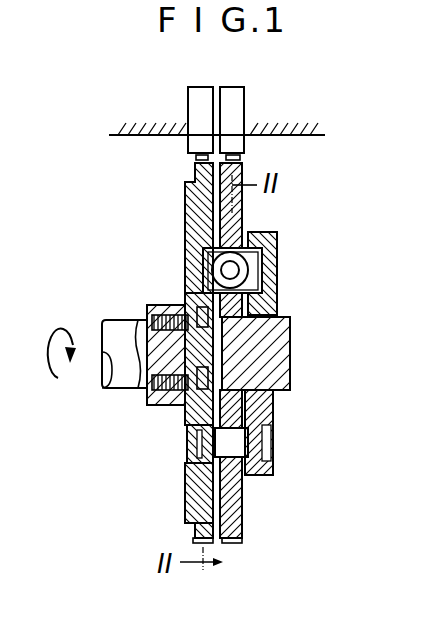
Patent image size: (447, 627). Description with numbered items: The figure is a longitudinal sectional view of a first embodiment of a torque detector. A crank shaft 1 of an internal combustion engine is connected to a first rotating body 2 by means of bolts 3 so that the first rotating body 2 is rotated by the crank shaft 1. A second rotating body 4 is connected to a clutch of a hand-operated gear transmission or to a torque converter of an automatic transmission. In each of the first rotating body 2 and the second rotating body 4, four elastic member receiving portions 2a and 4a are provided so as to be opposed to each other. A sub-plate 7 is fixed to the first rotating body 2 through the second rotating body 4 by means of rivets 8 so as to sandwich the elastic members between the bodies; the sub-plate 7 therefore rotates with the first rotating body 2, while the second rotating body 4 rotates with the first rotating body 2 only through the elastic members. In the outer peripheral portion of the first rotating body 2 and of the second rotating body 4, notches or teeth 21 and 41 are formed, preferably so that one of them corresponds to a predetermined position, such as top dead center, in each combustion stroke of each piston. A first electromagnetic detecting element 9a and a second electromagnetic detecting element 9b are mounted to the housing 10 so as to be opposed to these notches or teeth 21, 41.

The crank shaft 1 is at (122, 382).
The first rotating body 2 is at (197, 515).
The elastic member receiving portions 2a is at (212, 242).
The bolts 3 is at (185, 407).
The second rotating body 4 is at (237, 515).
The elastic member receiving portions 4a is at (240, 222).
The sub-plate 7 is at (262, 472).
The rivets 8 is at (253, 445).
The first electromagnetic detecting element 9a is at (200, 112).
The second electromagnetic detecting element 9b is at (233, 113).
The housing 10 is at (302, 133).
The notches or teeth 21 is at (212, 543).
The notches or teeth 41 is at (237, 543).